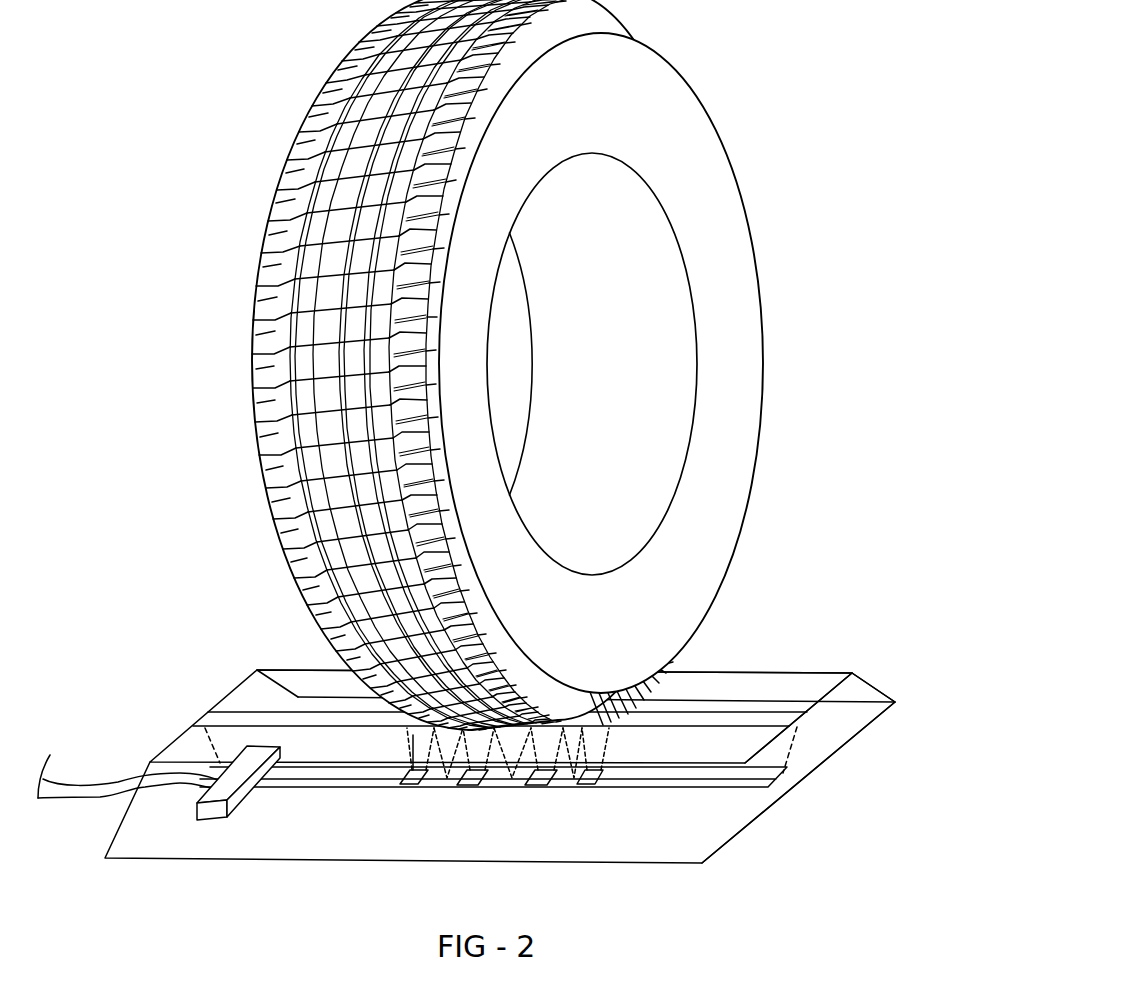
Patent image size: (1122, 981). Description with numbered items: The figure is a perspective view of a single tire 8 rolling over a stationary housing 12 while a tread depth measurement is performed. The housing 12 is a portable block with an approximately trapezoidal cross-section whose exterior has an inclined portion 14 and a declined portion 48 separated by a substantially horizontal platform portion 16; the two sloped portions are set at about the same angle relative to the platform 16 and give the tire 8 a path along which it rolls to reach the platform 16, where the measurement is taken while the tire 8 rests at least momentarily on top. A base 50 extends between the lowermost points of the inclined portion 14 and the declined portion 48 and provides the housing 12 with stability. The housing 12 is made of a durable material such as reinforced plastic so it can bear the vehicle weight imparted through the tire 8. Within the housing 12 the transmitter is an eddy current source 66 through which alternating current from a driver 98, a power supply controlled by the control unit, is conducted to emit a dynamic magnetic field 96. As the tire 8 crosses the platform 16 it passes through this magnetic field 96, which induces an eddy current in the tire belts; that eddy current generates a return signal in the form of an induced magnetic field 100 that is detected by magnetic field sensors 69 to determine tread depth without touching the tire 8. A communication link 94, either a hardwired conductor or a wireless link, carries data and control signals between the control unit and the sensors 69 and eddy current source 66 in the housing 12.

The tire 8 is at (752, 168).
The housing 12 is at (148, 750).
The inclined portion 14 is at (867, 683).
The platform portion 16 is at (760, 688).
The declined portion 48 is at (675, 827).
The base 50 is at (840, 747).
The eddy current source 66 is at (440, 785).
The magnetic field sensor 69 is at (410, 785).
The communication link 94 is at (90, 790).
The dynamic magnetic field 96 is at (583, 743).
The driver 98 is at (213, 807).
The induced magnetic field 100 is at (410, 738).